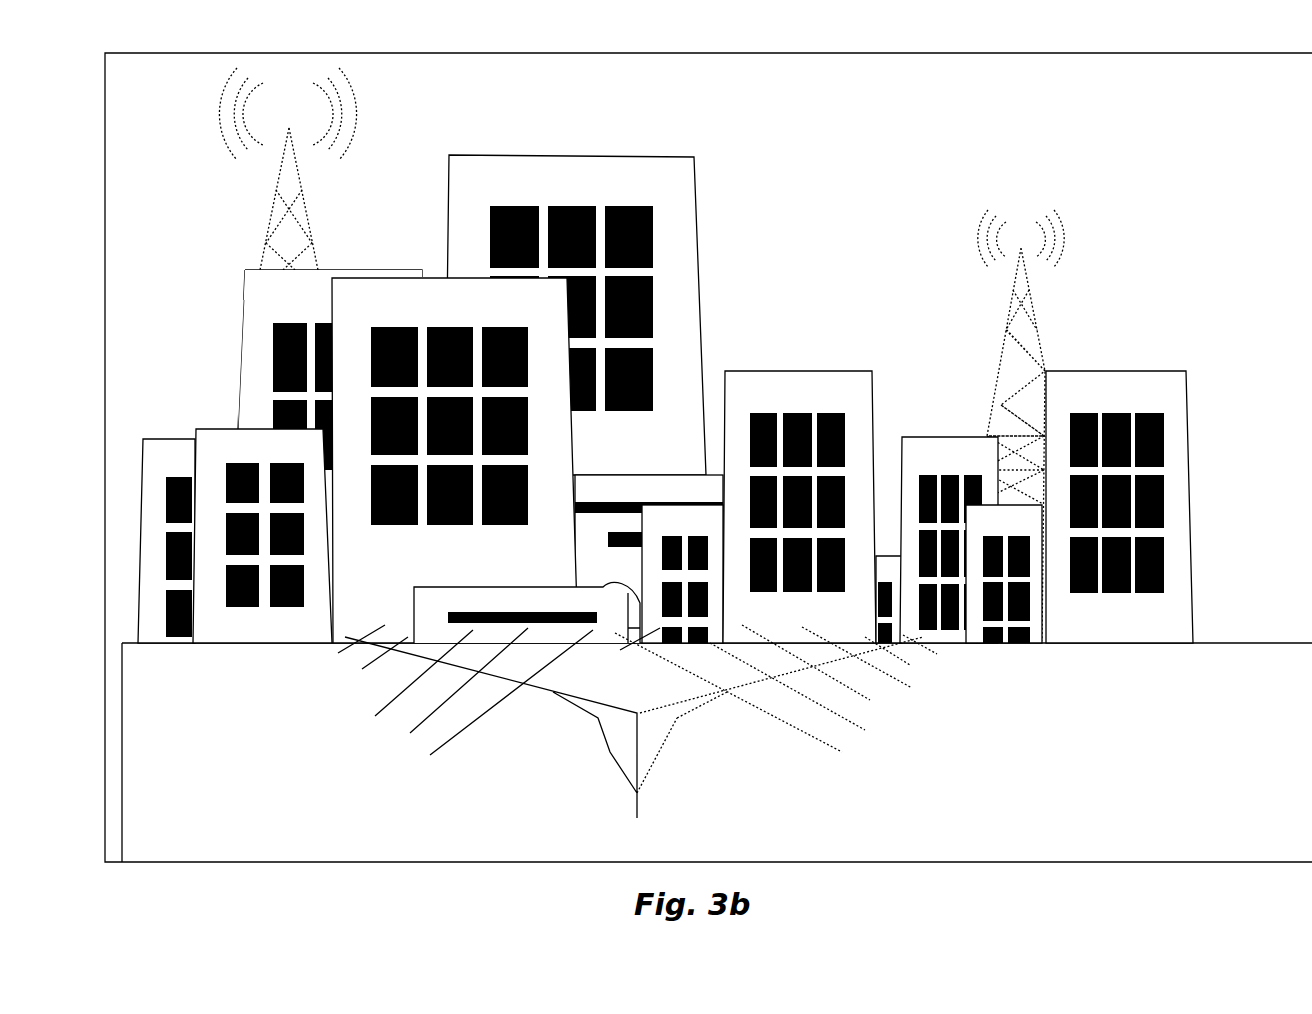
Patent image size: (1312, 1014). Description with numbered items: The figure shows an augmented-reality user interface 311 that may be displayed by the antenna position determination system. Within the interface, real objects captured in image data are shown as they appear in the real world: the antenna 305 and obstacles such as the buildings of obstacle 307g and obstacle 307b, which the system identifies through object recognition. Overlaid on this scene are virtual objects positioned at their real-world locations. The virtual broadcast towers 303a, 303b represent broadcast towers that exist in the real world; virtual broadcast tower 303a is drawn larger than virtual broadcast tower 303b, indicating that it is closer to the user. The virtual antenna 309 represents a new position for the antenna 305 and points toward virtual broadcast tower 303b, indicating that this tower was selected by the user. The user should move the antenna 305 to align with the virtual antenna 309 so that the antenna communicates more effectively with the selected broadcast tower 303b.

The virtual broadcast tower 303a is at (313, 237).
The virtual broadcast tower 303b is at (1039, 325).
The antenna 305 is at (367, 688).
The obstacle 307b is at (1146, 375).
The obstacle 307g is at (690, 188).
The virtual antenna 309 is at (903, 717).
The augmented-reality user interface 311 is at (1238, 53).